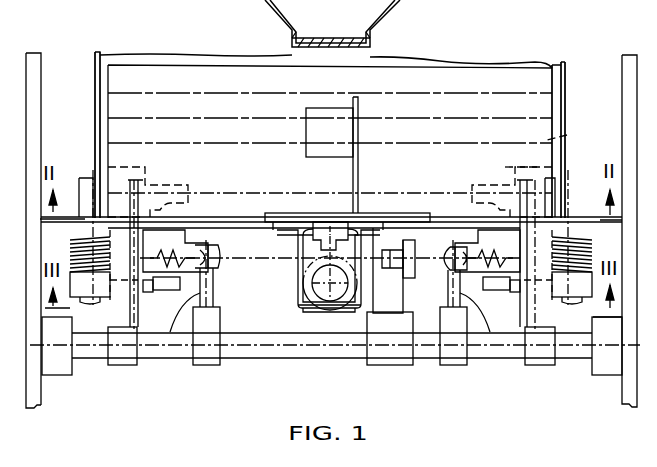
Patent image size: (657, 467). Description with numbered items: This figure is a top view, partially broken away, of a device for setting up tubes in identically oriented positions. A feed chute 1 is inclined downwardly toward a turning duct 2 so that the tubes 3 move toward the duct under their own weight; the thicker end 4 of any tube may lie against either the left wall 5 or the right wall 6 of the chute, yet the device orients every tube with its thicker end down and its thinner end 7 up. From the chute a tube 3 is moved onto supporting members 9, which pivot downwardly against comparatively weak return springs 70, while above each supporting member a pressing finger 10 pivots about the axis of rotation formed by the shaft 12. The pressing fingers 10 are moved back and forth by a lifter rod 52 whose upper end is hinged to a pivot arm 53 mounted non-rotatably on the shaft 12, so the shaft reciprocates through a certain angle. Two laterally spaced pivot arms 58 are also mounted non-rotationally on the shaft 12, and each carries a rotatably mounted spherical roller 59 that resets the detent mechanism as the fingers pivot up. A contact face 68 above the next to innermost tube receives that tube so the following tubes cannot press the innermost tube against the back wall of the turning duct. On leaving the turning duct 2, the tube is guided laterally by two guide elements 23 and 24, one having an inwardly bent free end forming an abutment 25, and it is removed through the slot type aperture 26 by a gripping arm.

The feed chute 1 is at (203, 63).
The turning duct 2 is at (243, 208).
The tube 3 is at (123, 72).
The thicker end 4 is at (107, 82).
The left wall 5 is at (100, 55).
The right wall 6 is at (563, 93).
The thinner end 7 is at (542, 83).
The supporting member 9 is at (578, 129).
The pressing finger 10 is at (505, 167).
The shaft 12 is at (500, 350).
The guide element 23 is at (400, 279).
The guide element 24 is at (300, 245).
The abutment 25 is at (318, 312).
The slot type aperture 26 is at (315, 248).
The lifter rod 52 is at (387, 235).
The pivot arm 53 is at (410, 277).
The pivot arm 58 is at (178, 312).
The spherical roller 59 is at (226, 245).
The contact face 68 is at (323, 123).
The return spring 70 is at (90, 267).